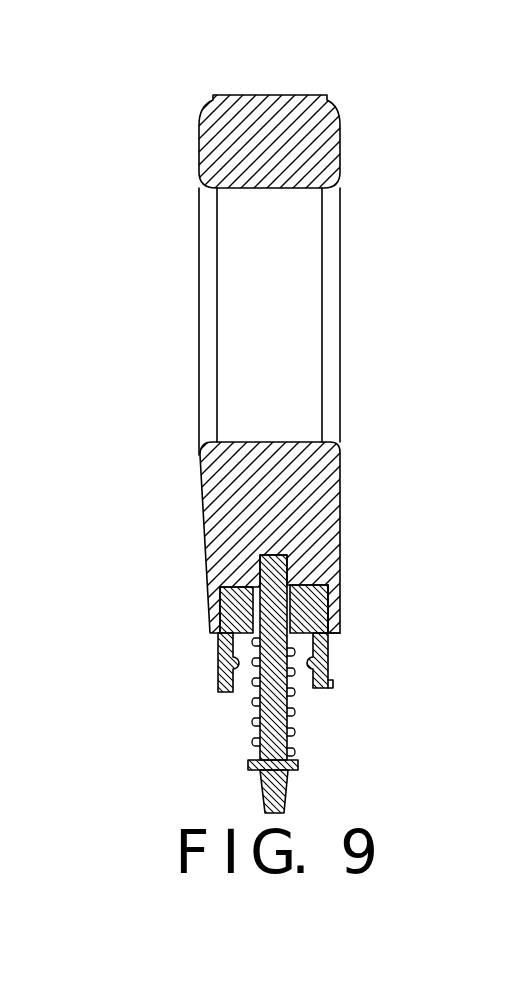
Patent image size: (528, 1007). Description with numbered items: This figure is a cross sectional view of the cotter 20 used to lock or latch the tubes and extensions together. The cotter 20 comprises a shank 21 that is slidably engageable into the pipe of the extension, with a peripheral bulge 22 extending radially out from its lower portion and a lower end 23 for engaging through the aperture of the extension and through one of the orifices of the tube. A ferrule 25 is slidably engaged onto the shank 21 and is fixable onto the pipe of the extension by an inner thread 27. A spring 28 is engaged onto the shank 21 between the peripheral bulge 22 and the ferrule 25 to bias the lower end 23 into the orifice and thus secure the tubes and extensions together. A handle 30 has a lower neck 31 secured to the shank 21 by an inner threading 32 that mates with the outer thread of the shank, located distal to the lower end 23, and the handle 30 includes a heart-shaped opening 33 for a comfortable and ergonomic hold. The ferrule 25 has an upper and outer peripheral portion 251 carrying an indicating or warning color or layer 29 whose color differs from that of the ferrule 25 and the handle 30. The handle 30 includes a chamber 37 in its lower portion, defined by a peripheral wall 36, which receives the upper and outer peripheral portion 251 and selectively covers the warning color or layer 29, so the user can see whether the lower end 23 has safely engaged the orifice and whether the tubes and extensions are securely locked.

The cotter 20 is at (204, 105).
The handle 30 is at (340, 115).
The heart-shaped opening 33 is at (312, 283).
The inner threading 32 is at (295, 543).
The lower neck 31 is at (210, 557).
The peripheral wall 36 is at (210, 605).
The chamber 37 is at (336, 573).
The upper and outer peripheral portion 251 is at (337, 602).
The indicating or warning color or layer 29 is at (337, 627).
The spring 28 is at (327, 673).
The inner thread 27 is at (218, 675).
The ferrule 25 is at (329, 688).
The shank 21 is at (258, 708).
The peripheral bulge 22 is at (298, 762).
The lower end 23 is at (265, 805).